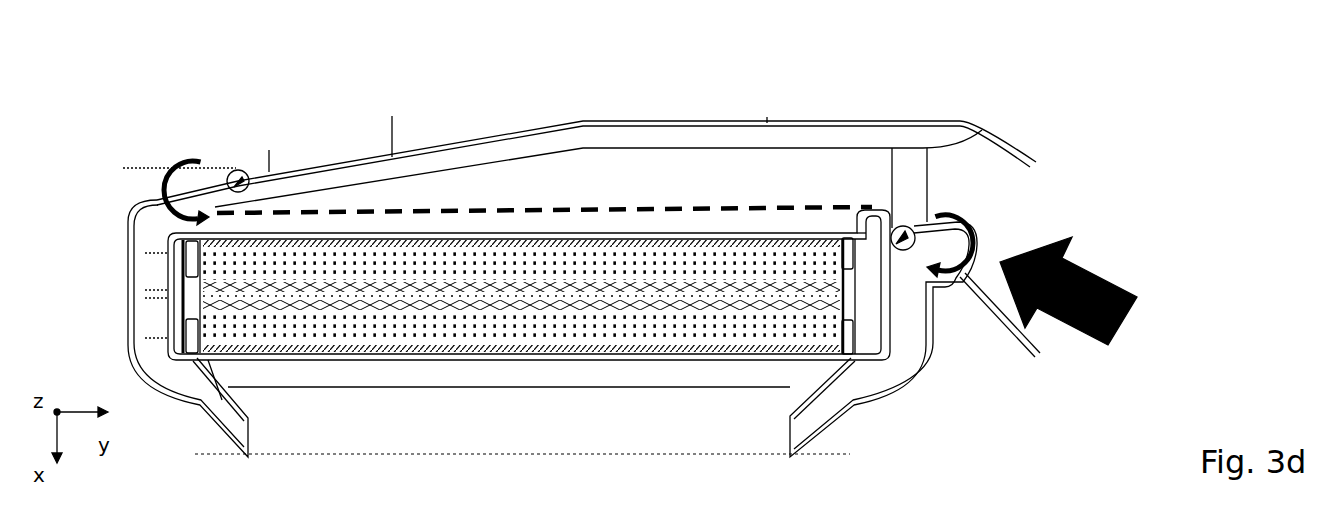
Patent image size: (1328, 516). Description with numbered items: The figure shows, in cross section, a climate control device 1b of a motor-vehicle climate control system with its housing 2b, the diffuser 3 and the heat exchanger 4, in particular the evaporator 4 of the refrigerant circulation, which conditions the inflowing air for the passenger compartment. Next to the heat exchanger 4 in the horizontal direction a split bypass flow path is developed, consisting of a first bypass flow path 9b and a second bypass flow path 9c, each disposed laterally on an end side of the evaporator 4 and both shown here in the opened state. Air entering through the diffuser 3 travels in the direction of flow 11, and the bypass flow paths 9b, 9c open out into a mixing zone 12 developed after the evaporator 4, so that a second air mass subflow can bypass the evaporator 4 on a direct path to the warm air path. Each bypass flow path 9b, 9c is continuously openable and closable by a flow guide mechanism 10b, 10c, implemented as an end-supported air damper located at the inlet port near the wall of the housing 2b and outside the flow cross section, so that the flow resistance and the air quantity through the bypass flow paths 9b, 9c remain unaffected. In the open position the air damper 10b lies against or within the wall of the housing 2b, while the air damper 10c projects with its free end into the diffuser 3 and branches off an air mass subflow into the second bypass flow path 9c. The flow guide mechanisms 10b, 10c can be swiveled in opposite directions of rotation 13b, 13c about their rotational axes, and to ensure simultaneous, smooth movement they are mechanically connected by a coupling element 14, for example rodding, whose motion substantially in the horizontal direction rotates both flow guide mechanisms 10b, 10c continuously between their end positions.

The climate control device 1b is at (1151, 120).
The housing 2b is at (990, 132).
The diffuser 3 is at (1114, 247).
The heat exchanger 4 is at (406, 332).
The first bypass flow path 9b is at (146, 317).
The second bypass flow path 9c is at (910, 366).
The flow guide mechanism 10b is at (236, 171).
The flow guide mechanism 10c is at (905, 228).
The direction of flow 11 is at (1137, 297).
The mixing zone 12 is at (543, 424).
The direction of rotation 13b is at (168, 215).
The direction of rotation 13c is at (960, 267).
The coupling element 14 is at (532, 208).